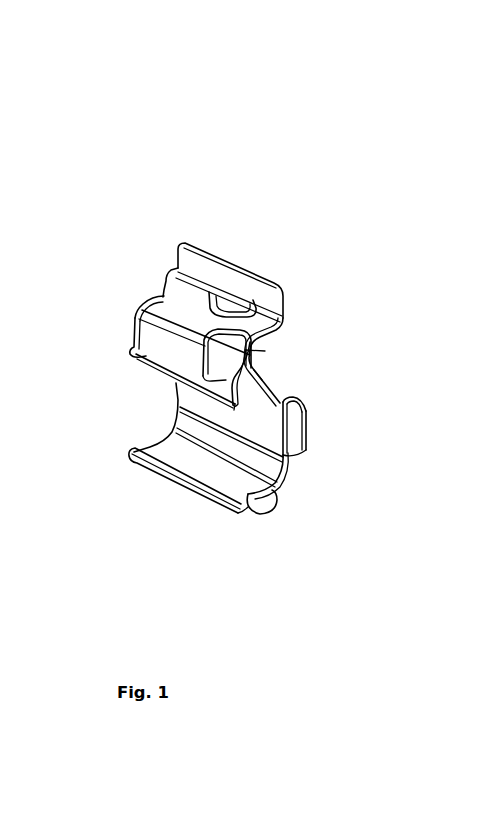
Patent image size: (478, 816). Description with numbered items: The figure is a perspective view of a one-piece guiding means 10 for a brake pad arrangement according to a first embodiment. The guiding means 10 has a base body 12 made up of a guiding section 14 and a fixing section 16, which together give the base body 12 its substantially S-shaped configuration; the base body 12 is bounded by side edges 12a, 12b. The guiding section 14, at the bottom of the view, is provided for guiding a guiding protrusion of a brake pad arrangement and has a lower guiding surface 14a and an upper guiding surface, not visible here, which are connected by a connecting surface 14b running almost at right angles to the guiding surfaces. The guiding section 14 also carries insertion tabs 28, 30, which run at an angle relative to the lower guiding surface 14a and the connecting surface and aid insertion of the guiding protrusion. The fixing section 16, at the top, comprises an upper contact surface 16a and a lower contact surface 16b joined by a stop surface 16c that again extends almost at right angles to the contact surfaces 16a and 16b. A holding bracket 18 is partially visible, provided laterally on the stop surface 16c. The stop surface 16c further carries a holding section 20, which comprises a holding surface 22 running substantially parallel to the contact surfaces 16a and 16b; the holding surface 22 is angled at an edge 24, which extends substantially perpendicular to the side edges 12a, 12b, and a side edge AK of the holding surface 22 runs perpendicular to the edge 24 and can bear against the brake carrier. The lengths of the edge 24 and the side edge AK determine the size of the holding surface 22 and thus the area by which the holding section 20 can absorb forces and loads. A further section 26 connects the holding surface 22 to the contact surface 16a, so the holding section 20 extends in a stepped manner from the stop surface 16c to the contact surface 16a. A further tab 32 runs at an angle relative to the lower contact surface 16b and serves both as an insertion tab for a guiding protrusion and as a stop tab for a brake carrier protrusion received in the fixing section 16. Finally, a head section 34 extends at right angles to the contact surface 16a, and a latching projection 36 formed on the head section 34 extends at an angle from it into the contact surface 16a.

The guiding means 10 is at (286, 125).
The base body 12 is at (126, 270).
The side edge 12a is at (134, 443).
The side edge 12b is at (288, 297).
The guiding section 14 is at (180, 508).
The lower guiding surface 14a is at (178, 466).
The connecting surface 14b is at (257, 437).
The fixing section 16 is at (338, 292).
The upper contact surface 16a is at (188, 293).
The lower contact surface 16b is at (300, 445).
The stop surface 16c is at (134, 352).
The holding bracket 18 is at (134, 321).
The holding section 20 is at (199, 387).
The holding surface 22 is at (243, 358).
The edge 24 is at (262, 386).
The further section 26 is at (250, 352).
The insertion tab 28 is at (258, 505).
The insertion tab 30 is at (296, 456).
The further tab 32 is at (300, 425).
The head section 34 is at (185, 255).
The latching projection 36 is at (235, 296).
The side edge AK is at (233, 366).